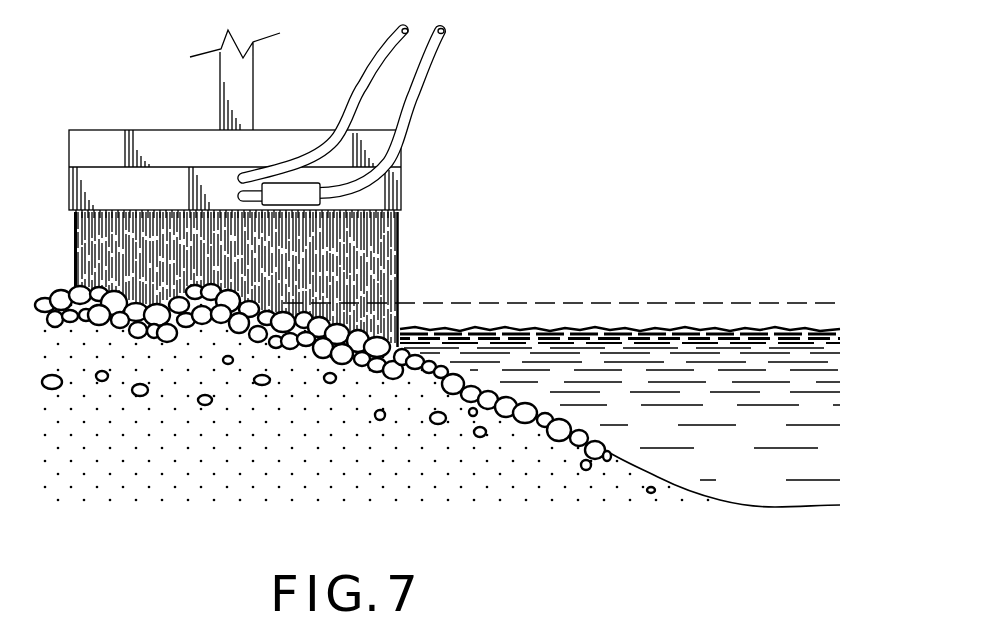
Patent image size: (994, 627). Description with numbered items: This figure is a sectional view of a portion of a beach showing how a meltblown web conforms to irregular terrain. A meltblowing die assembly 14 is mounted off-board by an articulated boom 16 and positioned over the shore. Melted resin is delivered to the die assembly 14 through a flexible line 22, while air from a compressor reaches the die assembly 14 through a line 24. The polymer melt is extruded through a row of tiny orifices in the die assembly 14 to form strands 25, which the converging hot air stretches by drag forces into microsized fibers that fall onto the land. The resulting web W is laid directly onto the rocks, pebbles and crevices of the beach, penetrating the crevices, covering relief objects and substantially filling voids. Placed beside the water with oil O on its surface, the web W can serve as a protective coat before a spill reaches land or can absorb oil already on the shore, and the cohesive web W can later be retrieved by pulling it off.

The meltblowing die assembly 14 is at (403, 181).
The articulated boom 16 is at (233, 79).
The flexible line 22 is at (387, 53).
The air line 24 is at (417, 103).
The strands 25 is at (401, 240).
The web W is at (322, 322).
The oil layer on water surface O is at (681, 328).